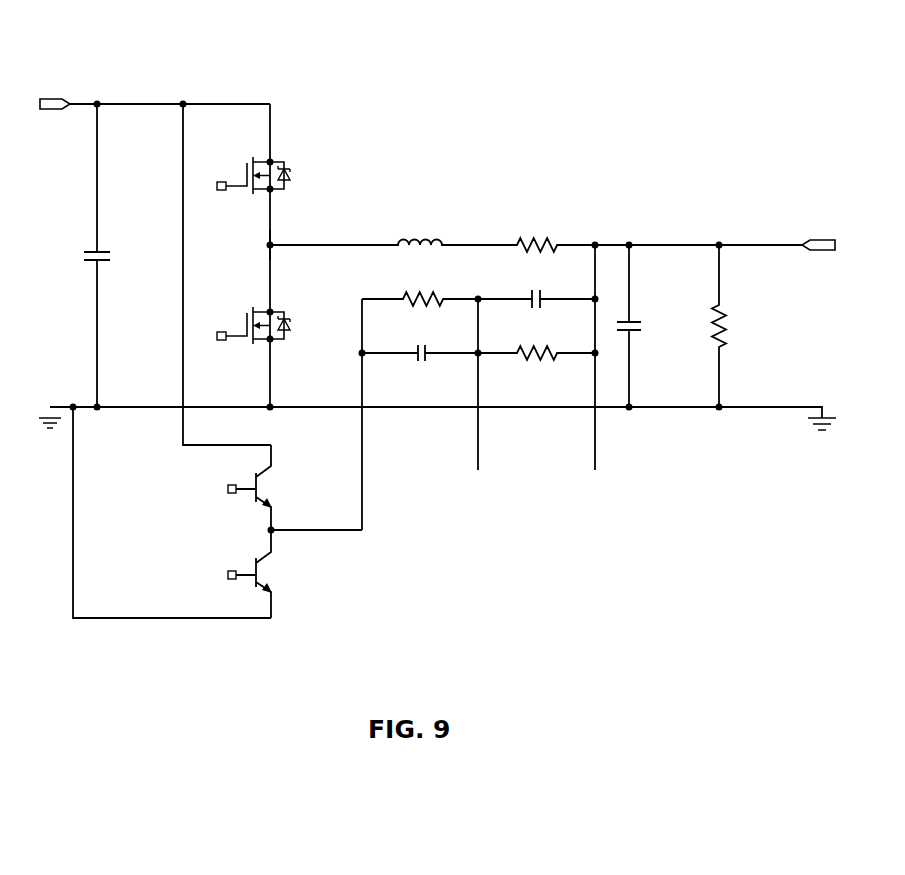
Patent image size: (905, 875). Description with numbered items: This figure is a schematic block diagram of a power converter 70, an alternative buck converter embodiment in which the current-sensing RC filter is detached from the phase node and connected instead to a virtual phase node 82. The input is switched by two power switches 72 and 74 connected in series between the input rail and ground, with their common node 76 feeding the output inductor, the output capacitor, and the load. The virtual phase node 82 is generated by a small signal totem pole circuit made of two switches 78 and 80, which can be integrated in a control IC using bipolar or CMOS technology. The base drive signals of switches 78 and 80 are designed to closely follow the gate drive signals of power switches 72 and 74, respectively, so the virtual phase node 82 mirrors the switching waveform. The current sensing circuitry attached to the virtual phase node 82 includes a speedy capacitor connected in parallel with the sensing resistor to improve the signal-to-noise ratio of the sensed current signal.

The power converter 70 is at (119, 42).
The power switch 72 is at (280, 160).
The power switch 74 is at (280, 310).
The switching node 76 is at (268, 246).
The switch 78 is at (258, 488).
The switch 80 is at (258, 575).
The virtual phase node 82 is at (268, 532).